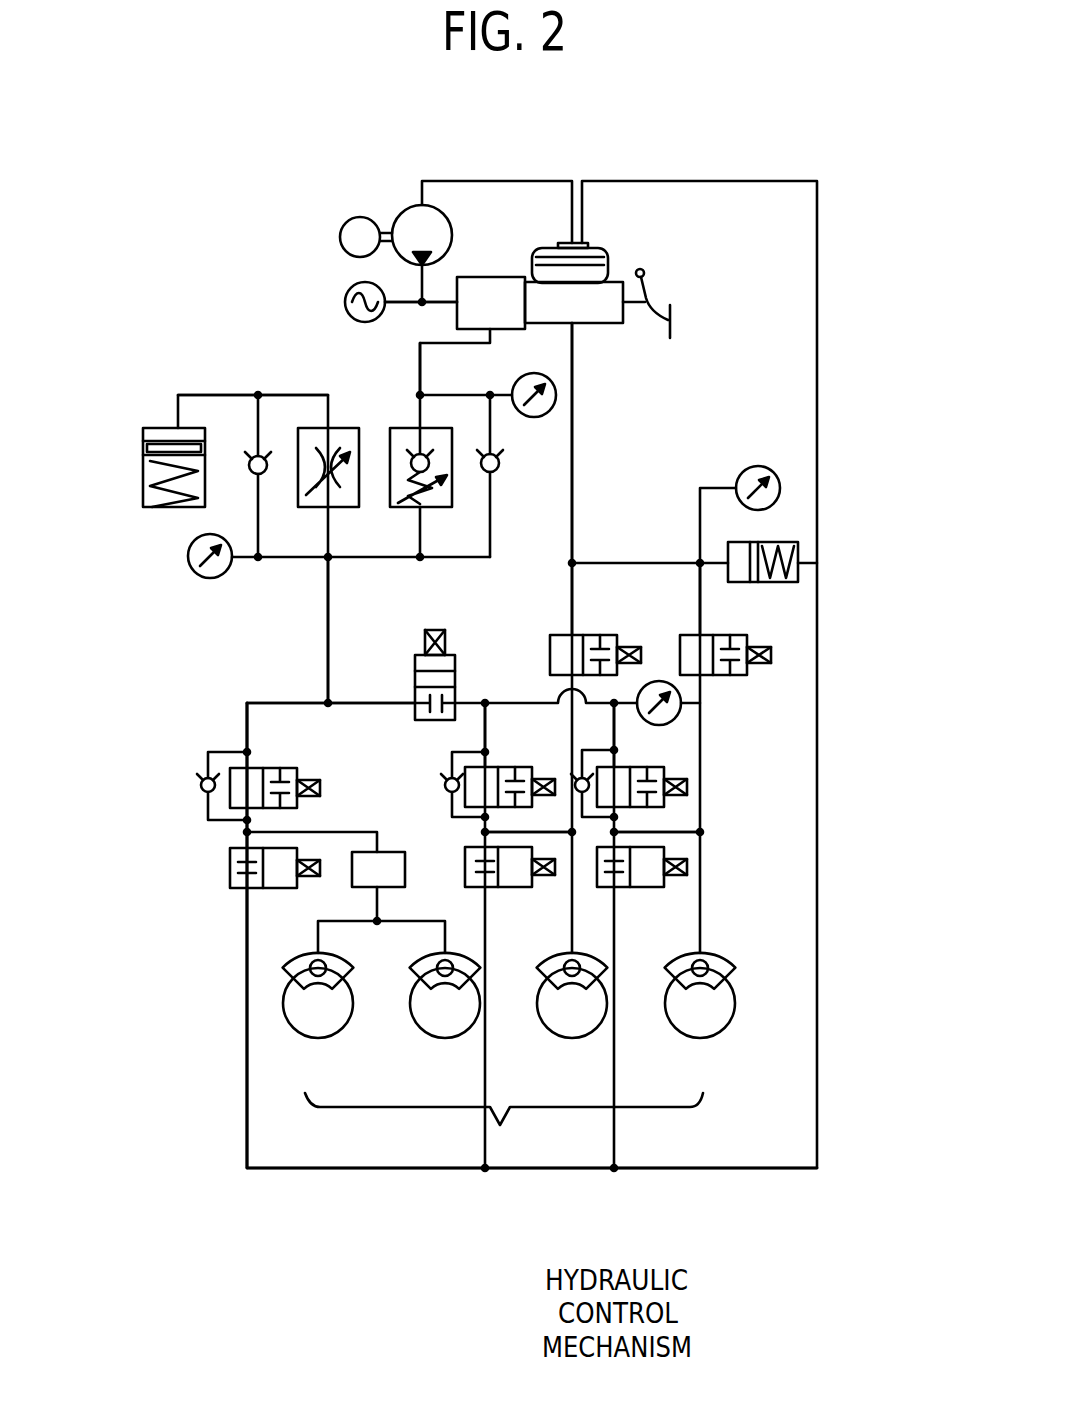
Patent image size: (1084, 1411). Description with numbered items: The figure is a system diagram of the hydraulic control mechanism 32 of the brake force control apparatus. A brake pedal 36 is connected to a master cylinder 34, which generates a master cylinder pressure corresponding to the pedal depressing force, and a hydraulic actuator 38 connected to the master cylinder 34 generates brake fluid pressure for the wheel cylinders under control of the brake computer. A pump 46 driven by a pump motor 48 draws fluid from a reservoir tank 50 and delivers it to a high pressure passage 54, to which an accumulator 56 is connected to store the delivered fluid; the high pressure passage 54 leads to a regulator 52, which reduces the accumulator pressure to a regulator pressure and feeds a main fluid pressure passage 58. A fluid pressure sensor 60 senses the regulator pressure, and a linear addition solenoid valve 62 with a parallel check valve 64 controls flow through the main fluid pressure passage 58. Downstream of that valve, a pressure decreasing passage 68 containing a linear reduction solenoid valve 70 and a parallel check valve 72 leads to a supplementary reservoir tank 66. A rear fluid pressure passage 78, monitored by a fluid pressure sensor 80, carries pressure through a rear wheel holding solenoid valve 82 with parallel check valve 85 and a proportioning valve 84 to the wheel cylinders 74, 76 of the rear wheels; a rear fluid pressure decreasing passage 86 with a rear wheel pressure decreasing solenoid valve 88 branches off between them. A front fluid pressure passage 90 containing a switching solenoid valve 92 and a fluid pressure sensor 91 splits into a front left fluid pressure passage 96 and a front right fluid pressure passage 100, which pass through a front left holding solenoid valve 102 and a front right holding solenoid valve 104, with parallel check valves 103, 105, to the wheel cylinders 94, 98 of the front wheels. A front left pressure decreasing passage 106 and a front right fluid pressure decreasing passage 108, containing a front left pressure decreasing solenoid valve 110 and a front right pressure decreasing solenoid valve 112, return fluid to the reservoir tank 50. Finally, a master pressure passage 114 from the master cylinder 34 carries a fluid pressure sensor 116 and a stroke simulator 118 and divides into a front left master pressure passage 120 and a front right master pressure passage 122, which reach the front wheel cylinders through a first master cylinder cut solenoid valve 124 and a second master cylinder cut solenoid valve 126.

The hydraulic control mechanism 32 is at (510, 1194).
The master cylinder 34 is at (610, 280).
The brake pedal 36 is at (650, 290).
The hydraulic actuator 38 is at (849, 416).
The pump 46 is at (414, 206).
The pump motor 48 is at (356, 217).
The reservoir tank 50 is at (538, 247).
The regulator 52 is at (490, 277).
The high pressure passage 54 is at (437, 303).
The accumulator 56 is at (345, 302).
The main fluid pressure passage 58 is at (420, 358).
The fluid pressure sensor 60 is at (534, 366).
The linear addition solenoid valve 62 is at (405, 428).
The check valve 64 is at (500, 472).
The supplementary reservoir tank 66 is at (155, 507).
The pressure decreasing passage 68 is at (200, 395).
The linear reduction solenoid valve 70 is at (308, 428).
The check valve 72 is at (250, 476).
The wheel cylinder 74 is at (288, 985).
The wheel cylinder 76 is at (413, 977).
The rear fluid pressure passage 78 is at (327, 600).
The fluid pressure sensor 80 is at (205, 578).
The rear wheel holding solenoid valve 82 is at (281, 768).
The proportioning valve 84 is at (405, 868).
The check valve 85 is at (200, 787).
The rear fluid pressure decreasing passage 86 is at (247, 1012).
The rear wheel pressure decreasing solenoid valve 88 is at (230, 868).
The front fluid pressure passage 90 is at (367, 704).
The fluid pressure sensor 91 is at (700, 705).
The switching solenoid valve 92 is at (415, 664).
The wheel cylinder 94 is at (537, 977).
The front left fluid pressure passage 96 is at (488, 720).
The wheel cylinder 98 is at (665, 977).
The front right fluid pressure passage 100 is at (616, 742).
The front left holding solenoid valve 102 is at (522, 768).
The check valve 103 is at (447, 786).
The front right holding solenoid valve 104 is at (688, 770).
The check valve 105 is at (600, 815).
The front left pressure decreasing passage 106 is at (485, 832).
The front right pressure decreasing passage 108 is at (616, 838).
The front left pressure decreasing solenoid valve 110 is at (510, 888).
The front right pressure decreasing solenoid valve 112 is at (688, 870).
The master pressure passage 114 is at (572, 470).
The fluid pressure sensor 116 is at (756, 466).
The stroke simulator 118 is at (817, 563).
The front left master pressure passage 120 is at (572, 603).
The front right master pressure passage 122 is at (700, 605).
The first master cylinder cut solenoid valve 124 is at (610, 635).
The second master cylinder cut solenoid valve 126 is at (770, 640).